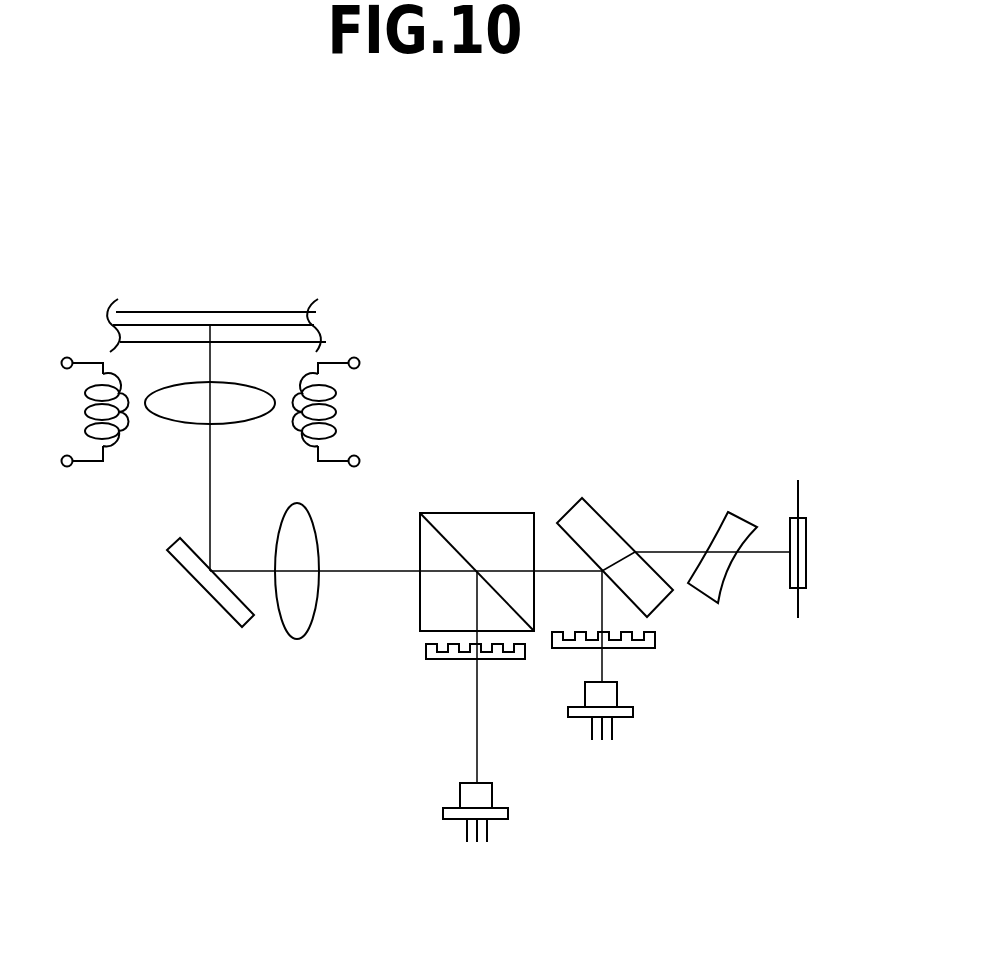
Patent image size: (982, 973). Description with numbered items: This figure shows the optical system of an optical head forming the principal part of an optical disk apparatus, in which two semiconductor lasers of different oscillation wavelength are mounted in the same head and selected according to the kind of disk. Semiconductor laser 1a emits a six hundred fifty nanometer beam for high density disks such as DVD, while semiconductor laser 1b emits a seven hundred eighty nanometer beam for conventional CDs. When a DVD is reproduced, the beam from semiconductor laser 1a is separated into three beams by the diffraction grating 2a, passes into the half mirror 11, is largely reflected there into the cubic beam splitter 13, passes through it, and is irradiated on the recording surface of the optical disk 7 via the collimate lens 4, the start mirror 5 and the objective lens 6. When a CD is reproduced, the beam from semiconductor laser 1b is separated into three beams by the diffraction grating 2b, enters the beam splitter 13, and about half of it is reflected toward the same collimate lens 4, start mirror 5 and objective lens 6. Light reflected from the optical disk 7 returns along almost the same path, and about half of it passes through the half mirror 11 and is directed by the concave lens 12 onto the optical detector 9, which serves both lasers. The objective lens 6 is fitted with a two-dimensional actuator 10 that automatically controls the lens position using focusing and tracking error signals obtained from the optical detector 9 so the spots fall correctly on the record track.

The semiconductor laser 1a is at (618, 692).
The semiconductor laser 1b is at (459, 793).
The diffraction grating 2a is at (656, 641).
The diffraction grating 2b is at (425, 653).
The collimate lens 4 is at (293, 623).
The start mirror 5 is at (202, 588).
The objective lens 6 is at (186, 415).
The optical disk 7 is at (250, 312).
The optical detector 9 is at (807, 545).
The two-dimensional actuator 10 is at (337, 405).
The half mirror 11 is at (588, 498).
The concave lens 12 is at (718, 525).
The cubic beam splitter 13 is at (442, 520).